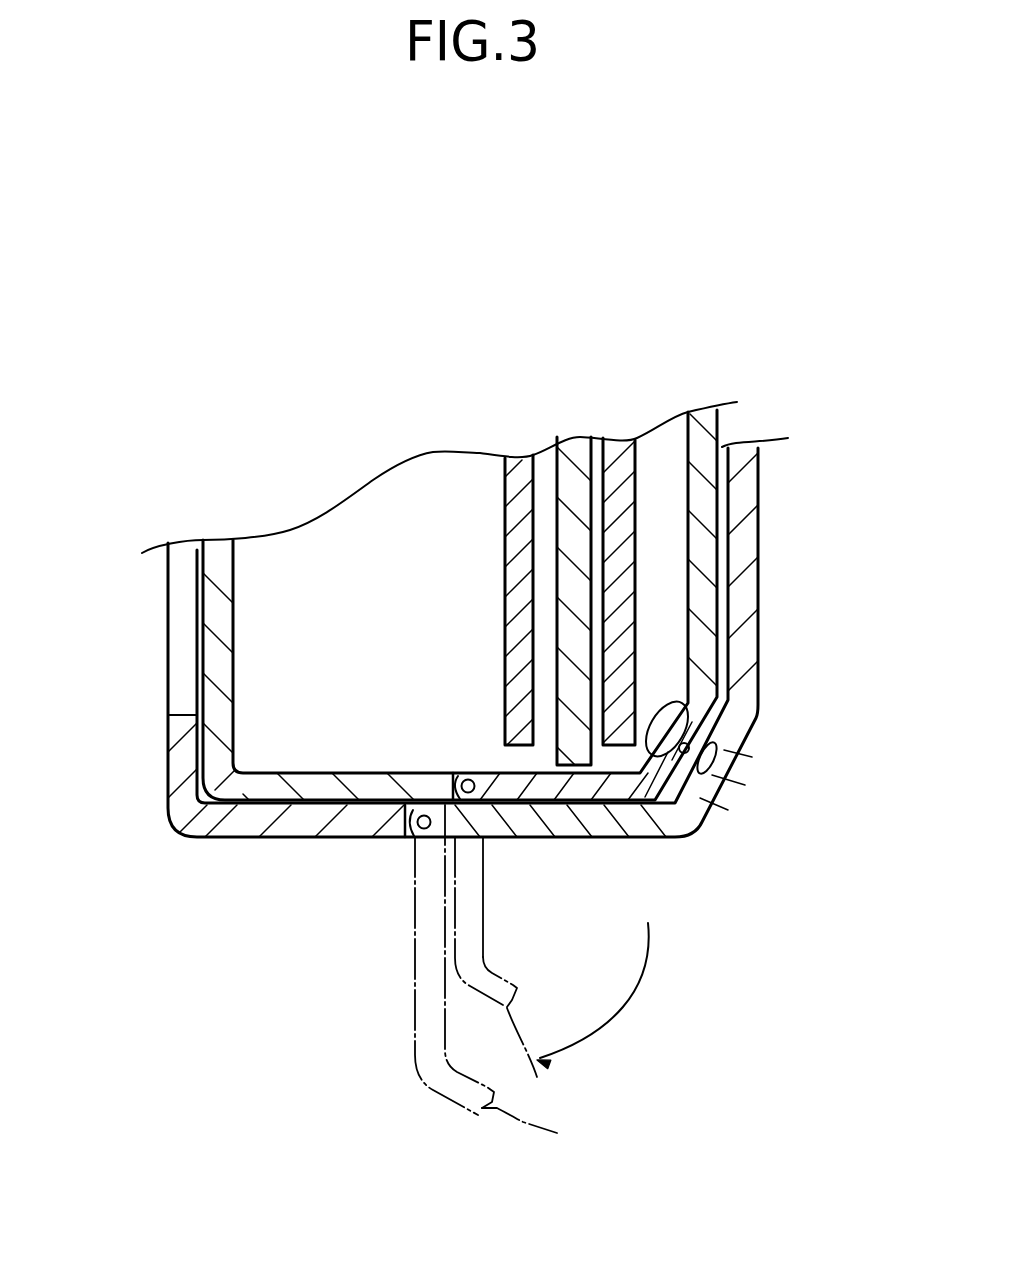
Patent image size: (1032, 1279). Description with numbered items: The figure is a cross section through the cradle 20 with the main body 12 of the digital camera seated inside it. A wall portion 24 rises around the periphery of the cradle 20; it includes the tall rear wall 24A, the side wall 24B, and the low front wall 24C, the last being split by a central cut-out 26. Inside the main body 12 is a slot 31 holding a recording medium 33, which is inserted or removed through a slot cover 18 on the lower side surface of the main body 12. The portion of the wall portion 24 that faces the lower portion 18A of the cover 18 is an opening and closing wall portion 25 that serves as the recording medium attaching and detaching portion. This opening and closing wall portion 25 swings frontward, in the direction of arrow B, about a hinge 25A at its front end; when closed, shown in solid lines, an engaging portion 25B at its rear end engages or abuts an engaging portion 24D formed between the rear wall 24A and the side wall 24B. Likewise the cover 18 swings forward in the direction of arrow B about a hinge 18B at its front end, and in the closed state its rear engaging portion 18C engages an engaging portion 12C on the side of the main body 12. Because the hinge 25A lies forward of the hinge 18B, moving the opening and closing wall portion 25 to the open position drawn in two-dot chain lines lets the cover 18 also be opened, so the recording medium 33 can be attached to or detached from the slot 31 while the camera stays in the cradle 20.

The main body 12 is at (728, 427).
The engaging portion 12C is at (692, 700).
The cover 18 is at (567, 812).
The lower portion 18A is at (613, 843).
The hinge 18B is at (462, 777).
The engaging portion 18C is at (705, 757).
The cradle 20 is at (768, 557).
The wall portion 24 is at (762, 495).
The rear wall 24A is at (762, 613).
The side wall 24B is at (290, 840).
The front wall 24C is at (168, 760).
The engaging portion 24D is at (703, 812).
The opening and closing wall portion 25 is at (512, 848).
The hinge 25A is at (423, 836).
The engaging portion 25B is at (712, 765).
The cut-out 26 is at (183, 712).
The slot 31 is at (505, 606).
The recording medium 33 is at (575, 583).
The arrow B is at (630, 997).